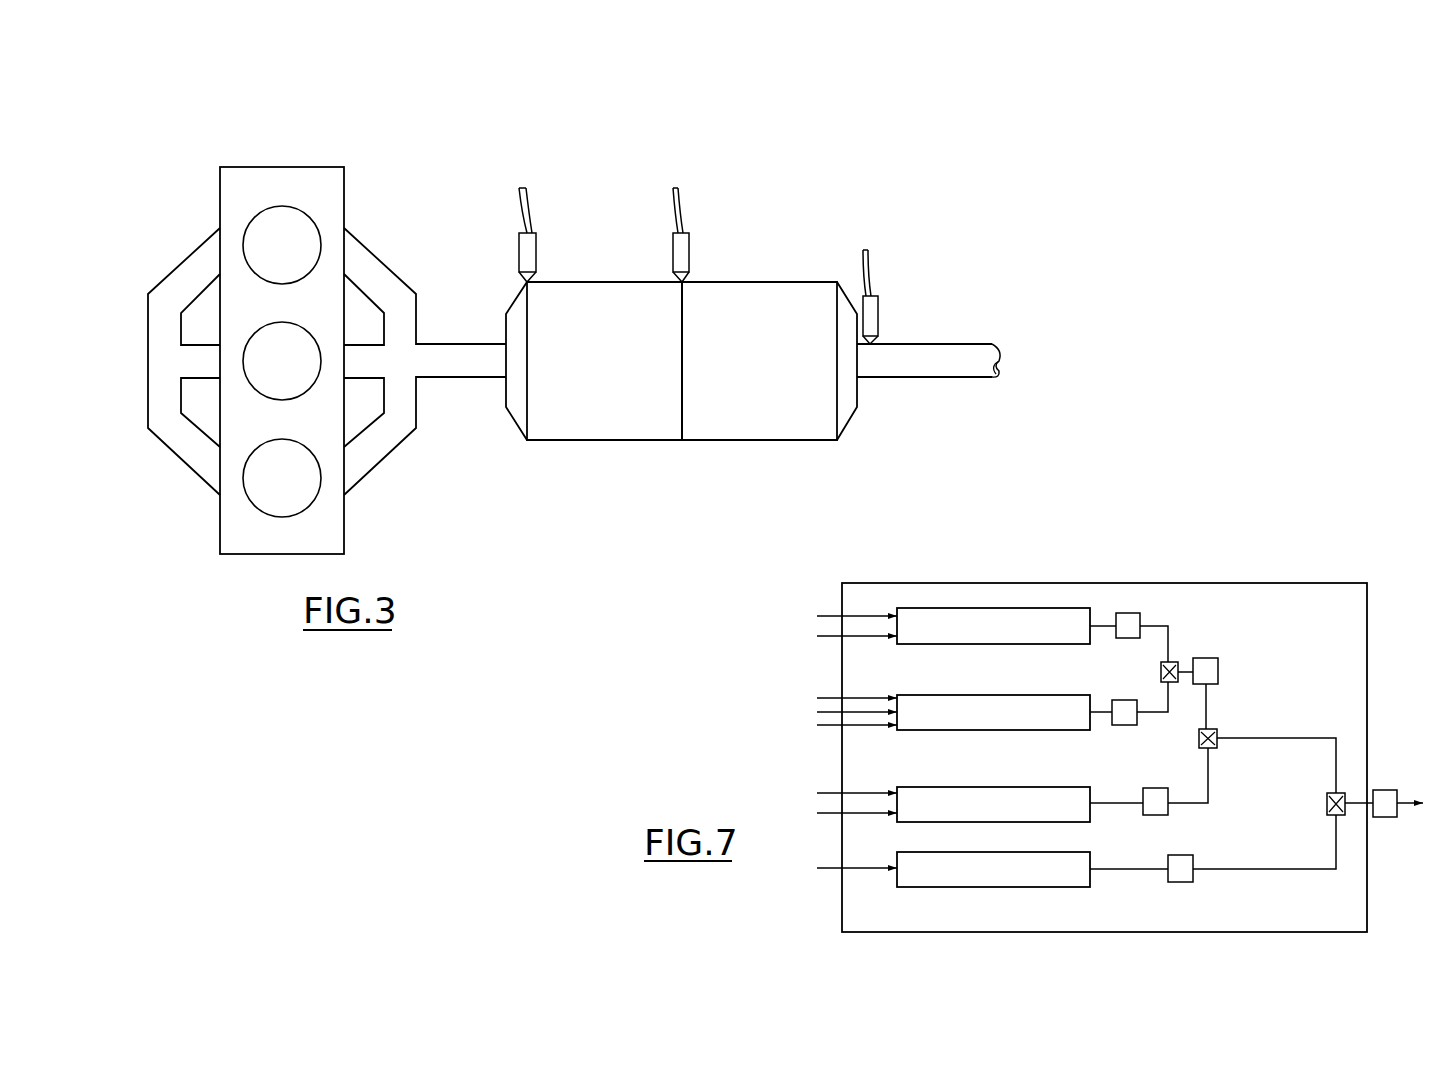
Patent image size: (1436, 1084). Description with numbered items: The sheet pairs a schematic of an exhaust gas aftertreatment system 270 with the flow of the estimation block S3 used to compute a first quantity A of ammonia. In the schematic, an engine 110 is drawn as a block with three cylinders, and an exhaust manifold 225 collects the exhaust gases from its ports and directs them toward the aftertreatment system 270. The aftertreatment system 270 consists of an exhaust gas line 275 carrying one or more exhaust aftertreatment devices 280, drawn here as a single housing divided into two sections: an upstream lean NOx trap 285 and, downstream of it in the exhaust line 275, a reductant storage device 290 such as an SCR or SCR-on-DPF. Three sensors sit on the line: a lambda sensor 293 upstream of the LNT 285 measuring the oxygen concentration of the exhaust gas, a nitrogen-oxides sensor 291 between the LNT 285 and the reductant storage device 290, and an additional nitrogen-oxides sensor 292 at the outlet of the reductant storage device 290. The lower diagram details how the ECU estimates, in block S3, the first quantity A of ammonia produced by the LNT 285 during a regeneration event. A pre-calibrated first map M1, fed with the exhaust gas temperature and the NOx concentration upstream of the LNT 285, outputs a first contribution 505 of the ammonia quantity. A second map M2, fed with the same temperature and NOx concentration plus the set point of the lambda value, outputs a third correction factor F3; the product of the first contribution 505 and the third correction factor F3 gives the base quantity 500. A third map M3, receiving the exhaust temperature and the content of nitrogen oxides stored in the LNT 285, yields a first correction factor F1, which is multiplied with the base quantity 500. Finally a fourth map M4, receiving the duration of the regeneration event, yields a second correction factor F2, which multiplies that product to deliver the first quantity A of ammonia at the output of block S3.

In FIG. 3, the engine 110 is at (218, 155).
In FIG. 3, the exhaust manifold 225 is at (398, 388).
In FIG. 3, the exhaust gas aftertreatment system 270 is at (900, 267).
In FIG. 3, the exhaust gas line 275 is at (945, 360).
In FIG. 3, the exhaust aftertreatment device 280 is at (627, 252).
In FIG. 3, the lean NOx trap 285 is at (614, 405).
In FIG. 3, the reductant storage device 290 is at (753, 407).
In FIG. 3, the nitrogen-oxides sensor 291 is at (688, 242).
In FIG. 3, the additional nitrogen-oxides sensor 292 is at (868, 307).
In FIG. 3, the lambda sensor 293 is at (525, 252).
In FIG. 7, the block of estimating a first quantity of ammonia S3 is at (1270, 583).
In FIG. 7, the first map M1 is at (953, 626).
In FIG. 7, the second map M2 is at (953, 712).
In FIG. 7, the third map M3 is at (953, 804).
In FIG. 7, the fourth map M4 is at (953, 869).
In FIG. 7, the first contribution 505 is at (1129, 615).
In FIG. 7, the base quantity 500 is at (1210, 667).
In FIG. 7, the first correction factor F1 is at (1155, 797).
In FIG. 7, the second correction factor F2 is at (1178, 857).
In FIG. 7, the third correction factor F3 is at (1125, 705).
In FIG. 7, the first quantity of ammonia A is at (1382, 790).